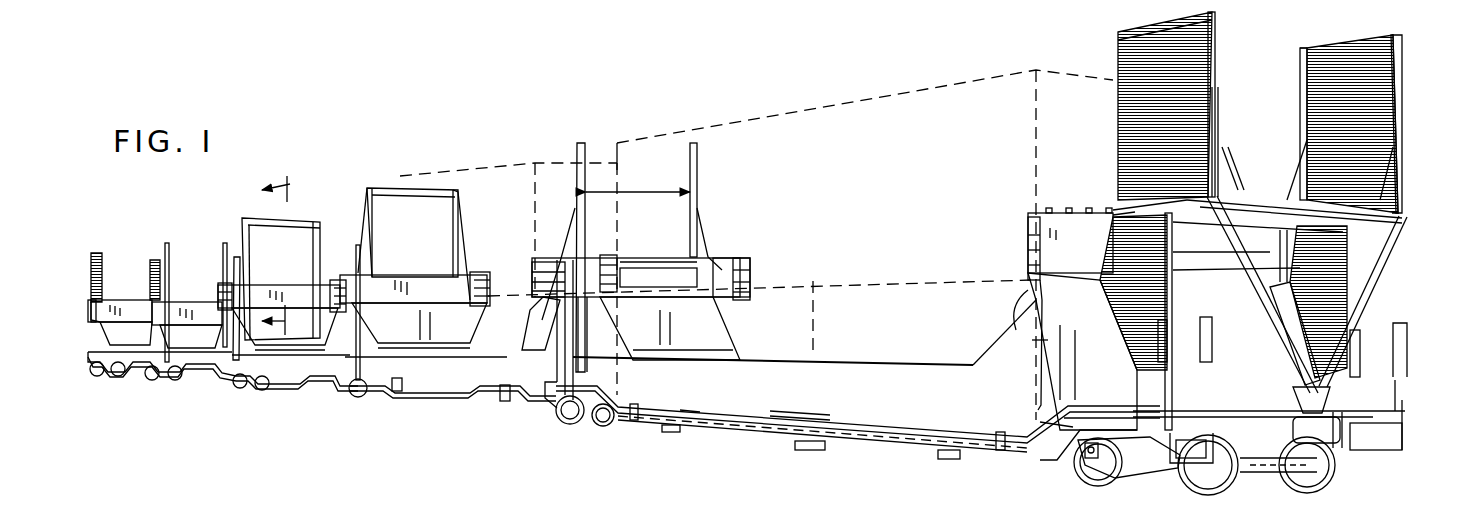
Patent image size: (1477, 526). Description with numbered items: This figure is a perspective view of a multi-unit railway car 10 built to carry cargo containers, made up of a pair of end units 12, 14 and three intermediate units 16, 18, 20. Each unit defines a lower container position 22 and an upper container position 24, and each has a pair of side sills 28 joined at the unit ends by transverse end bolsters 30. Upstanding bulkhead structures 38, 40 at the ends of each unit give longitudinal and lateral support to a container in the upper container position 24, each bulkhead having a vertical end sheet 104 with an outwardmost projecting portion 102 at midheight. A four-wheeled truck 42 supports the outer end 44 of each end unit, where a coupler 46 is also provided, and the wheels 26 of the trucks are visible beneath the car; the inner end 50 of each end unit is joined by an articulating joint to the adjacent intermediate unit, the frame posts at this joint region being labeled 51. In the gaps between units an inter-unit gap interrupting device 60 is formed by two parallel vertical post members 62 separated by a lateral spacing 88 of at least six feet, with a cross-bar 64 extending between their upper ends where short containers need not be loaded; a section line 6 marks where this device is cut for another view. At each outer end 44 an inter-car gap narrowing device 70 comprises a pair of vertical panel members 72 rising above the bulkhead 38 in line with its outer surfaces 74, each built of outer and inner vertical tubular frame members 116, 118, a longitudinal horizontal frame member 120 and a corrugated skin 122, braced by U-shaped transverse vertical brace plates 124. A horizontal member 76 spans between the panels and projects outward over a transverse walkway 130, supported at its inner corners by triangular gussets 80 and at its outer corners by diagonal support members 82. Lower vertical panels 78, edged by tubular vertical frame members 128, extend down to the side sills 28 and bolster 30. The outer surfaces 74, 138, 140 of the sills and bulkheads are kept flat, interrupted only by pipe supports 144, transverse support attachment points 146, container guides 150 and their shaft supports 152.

The multi-unit railway car 10 is at (1275, 41).
The end unit 12 is at (833, 440).
The end unit 14 is at (128, 368).
The intermediate unit 16 is at (476, 392).
The intermediate unit 18 is at (183, 372).
The intermediate unit 20 is at (297, 382).
The lower container position 22 is at (754, 442).
The upper container position 24 is at (526, 147).
The wheel truck 26 is at (1074, 462).
The side sill 28 is at (428, 392).
The end bolster 30 is at (1137, 403).
The bulkhead structure 38 is at (1008, 337).
The bulkhead structure 40 is at (432, 275).
The four-wheeled truck 42 is at (1260, 474).
The outer end 44 is at (1402, 440).
The coupler 46 is at (1338, 446).
The inner end 50 is at (560, 320).
The frame post 51 is at (560, 400).
The section line 6- 6 is at (282, 247).
The inter-unit gap interrupting device 60 is at (170, 246).
The vertical post member 62 is at (223, 275).
The cross-bar 64 is at (302, 222).
The inter-car gap narrowing device 70 is at (106, 252).
The vertical panel member 72 is at (149, 274).
The outer surface of bulkhead 74 is at (1070, 240).
The horizontal member 76 is at (1250, 218).
The lower vertical panel 78 is at (1110, 291).
The triangular vertical gusset 80 is at (1118, 200).
The diagonal support member 82 is at (1228, 243).
The lateral spacing 88 is at (656, 192).
The longitudinally outwardmost portion of bulkhead 102 is at (412, 275).
The vertical end sheet 104 is at (1238, 186).
The vertical tubular frame member 116 is at (1215, 40).
The vertical tubular frame member 118 is at (1300, 91).
The longitudinal horizontal frame member 120 is at (1320, 45).
The skin 122 is at (1355, 77).
The transverse vertical brace plate 124 is at (1221, 147).
The tubular metal vertical frame member 128 is at (1172, 276).
The transverse walkway 130 is at (1397, 392).
The outer surface 138 is at (1082, 351).
The outer surface 140 is at (759, 393).
The pipe support 144 is at (636, 406).
The transverse support member attachment point 146 is at (671, 425).
The container guide 150 is at (740, 254).
The support 152 is at (1040, 350).